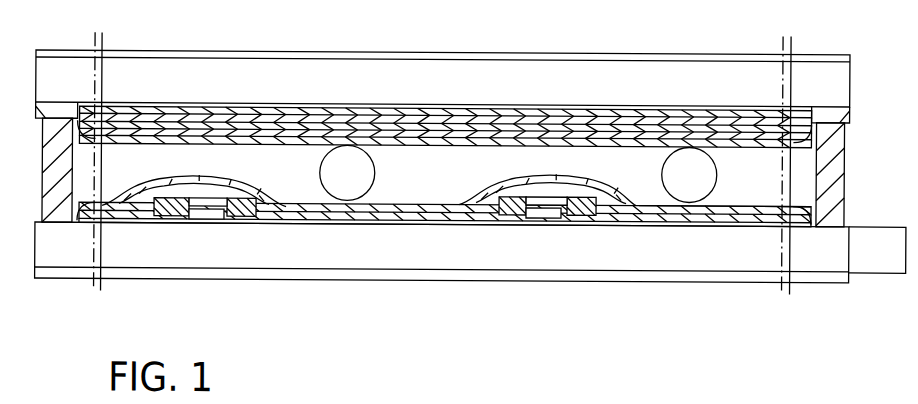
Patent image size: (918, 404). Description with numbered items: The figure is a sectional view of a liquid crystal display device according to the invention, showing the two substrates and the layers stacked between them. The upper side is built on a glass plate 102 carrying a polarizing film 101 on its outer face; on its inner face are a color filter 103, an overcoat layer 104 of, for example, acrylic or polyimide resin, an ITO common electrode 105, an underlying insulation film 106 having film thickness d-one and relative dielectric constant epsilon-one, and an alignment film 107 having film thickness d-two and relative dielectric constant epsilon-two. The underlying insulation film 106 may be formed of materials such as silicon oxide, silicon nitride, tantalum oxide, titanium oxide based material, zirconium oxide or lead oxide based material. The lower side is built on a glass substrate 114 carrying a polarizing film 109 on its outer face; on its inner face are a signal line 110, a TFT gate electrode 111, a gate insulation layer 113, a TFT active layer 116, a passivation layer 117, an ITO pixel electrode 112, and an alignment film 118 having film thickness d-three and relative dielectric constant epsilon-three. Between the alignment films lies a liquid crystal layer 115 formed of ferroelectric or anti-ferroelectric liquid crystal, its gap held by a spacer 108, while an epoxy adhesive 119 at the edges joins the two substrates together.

The polarizing film 101 is at (182, 53).
The glass plate 102 is at (258, 74).
The color filter 103 is at (338, 105).
The overcoat layer 104 is at (405, 111).
The ITO common electrode 105 is at (485, 117).
The underlying insulation film 106 is at (552, 125).
The alignment film 107 is at (633, 133).
The spacer 108 is at (692, 154).
The polarizing film 109 is at (67, 275).
The signal line 110 is at (133, 213).
The TFT gate electrode 111 is at (208, 222).
The ITO pixel electrode 112 is at (285, 213).
The gate insulation layer 113 is at (362, 221).
The glass substrate 114 is at (437, 253).
The liquid crystal layer 115 is at (468, 169).
The TFT active layer 116 is at (548, 202).
The passivation layer 117 is at (598, 218).
The alignment film 118 is at (718, 204).
The epoxy adhesive 119 is at (828, 213).